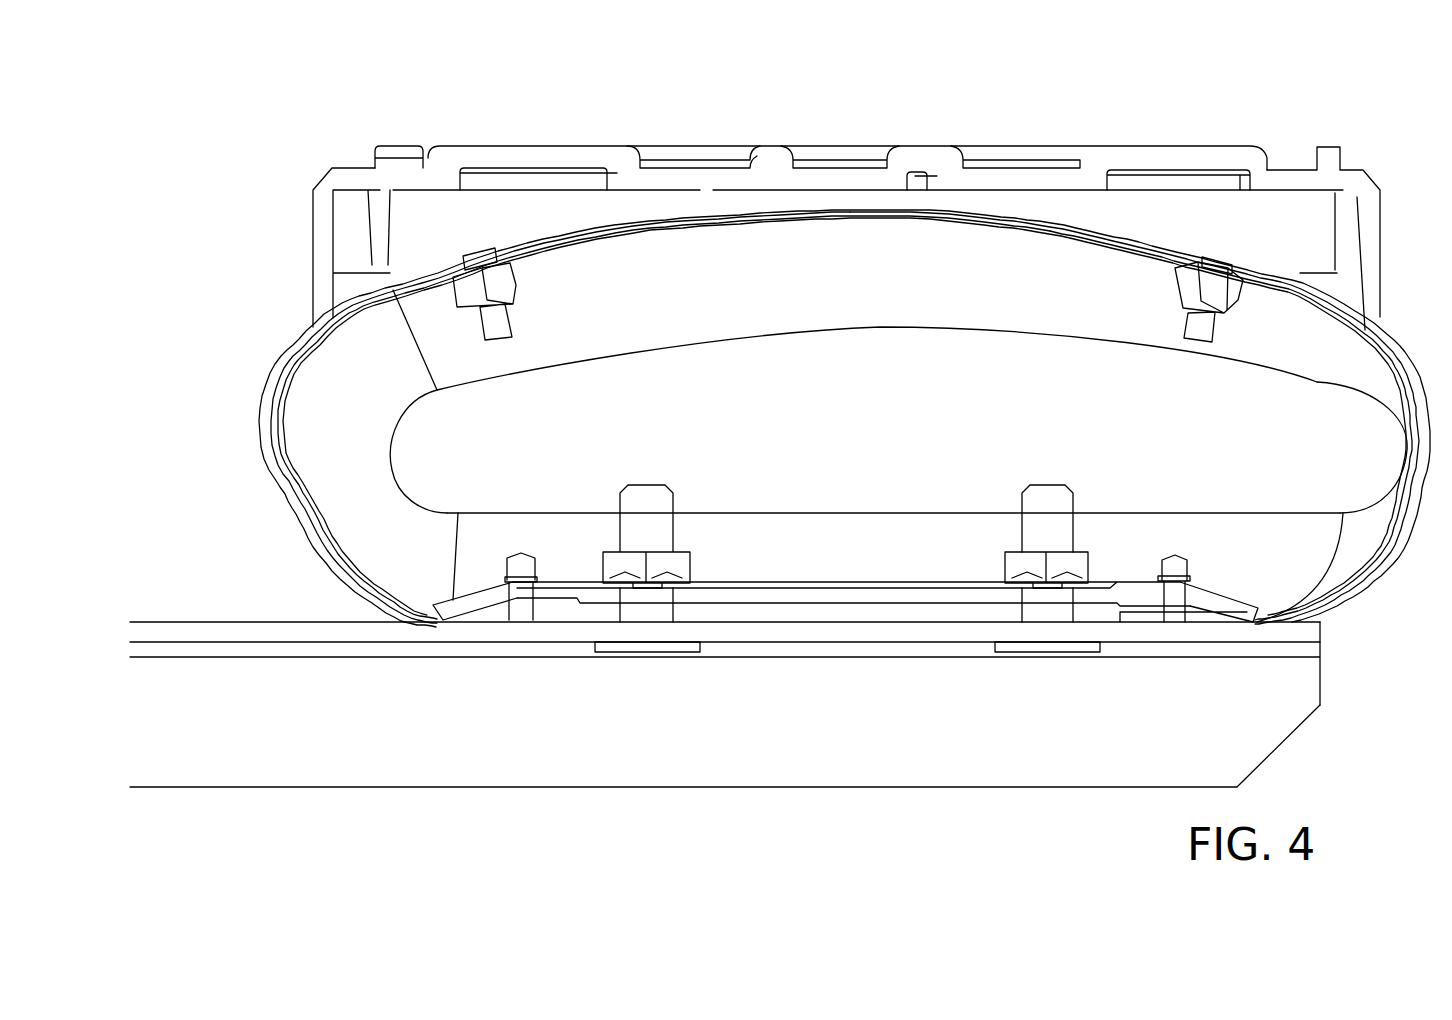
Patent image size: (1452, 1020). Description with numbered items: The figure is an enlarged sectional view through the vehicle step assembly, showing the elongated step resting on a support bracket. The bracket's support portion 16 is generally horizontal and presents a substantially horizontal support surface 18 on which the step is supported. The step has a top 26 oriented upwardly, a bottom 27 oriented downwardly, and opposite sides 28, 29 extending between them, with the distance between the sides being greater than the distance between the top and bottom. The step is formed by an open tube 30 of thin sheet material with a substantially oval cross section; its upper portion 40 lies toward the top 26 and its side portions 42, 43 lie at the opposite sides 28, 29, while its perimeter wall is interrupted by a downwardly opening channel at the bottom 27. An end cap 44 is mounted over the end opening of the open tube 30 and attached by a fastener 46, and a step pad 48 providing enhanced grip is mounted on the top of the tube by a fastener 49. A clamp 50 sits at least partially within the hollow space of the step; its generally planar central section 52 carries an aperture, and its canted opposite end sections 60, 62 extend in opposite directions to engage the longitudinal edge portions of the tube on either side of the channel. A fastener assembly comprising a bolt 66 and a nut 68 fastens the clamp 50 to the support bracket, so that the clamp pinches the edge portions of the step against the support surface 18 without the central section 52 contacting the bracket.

The support portion 16 is at (825, 750).
The support surface 18 is at (727, 620).
The top 26 is at (795, 211).
The bottom 27 is at (487, 622).
The side 28 is at (272, 380).
The side 29 is at (1390, 587).
The open tube 30 is at (965, 213).
The upper portion 40 is at (1080, 234).
The side portion 42 is at (281, 518).
The side portion 43 is at (1408, 532).
The end cap 44 is at (657, 290).
The fastener 46 is at (1180, 563).
The step pad 48 is at (1225, 155).
The fastener 49 is at (1205, 325).
The clamp 50 is at (858, 544).
The central section 52 is at (753, 597).
The end section 60 is at (478, 600).
The end section 62 is at (1227, 603).
The bolt 66 is at (1053, 527).
The nut 68 is at (1020, 565).